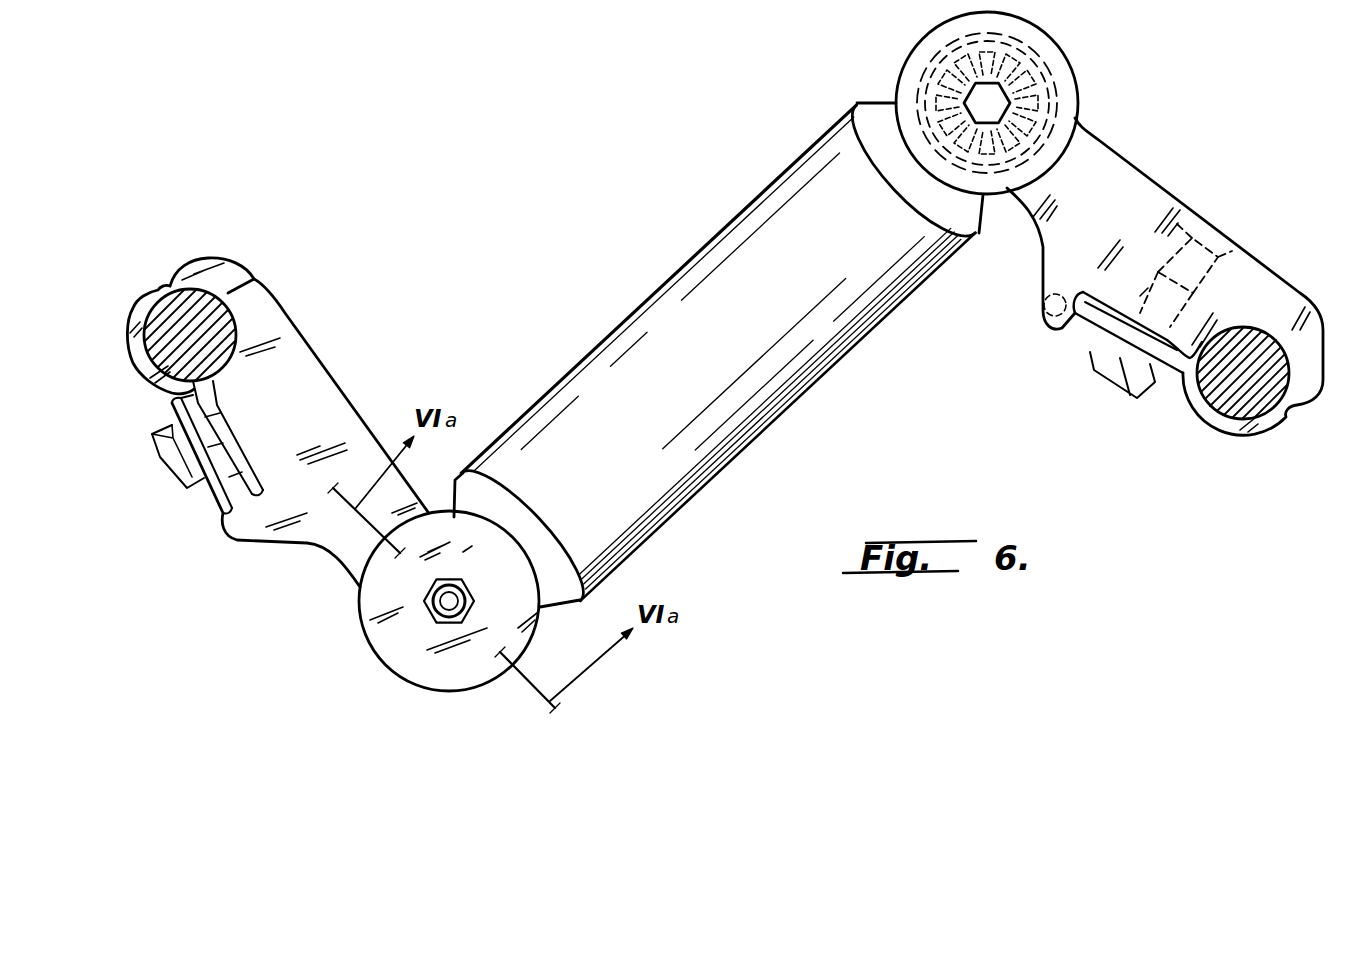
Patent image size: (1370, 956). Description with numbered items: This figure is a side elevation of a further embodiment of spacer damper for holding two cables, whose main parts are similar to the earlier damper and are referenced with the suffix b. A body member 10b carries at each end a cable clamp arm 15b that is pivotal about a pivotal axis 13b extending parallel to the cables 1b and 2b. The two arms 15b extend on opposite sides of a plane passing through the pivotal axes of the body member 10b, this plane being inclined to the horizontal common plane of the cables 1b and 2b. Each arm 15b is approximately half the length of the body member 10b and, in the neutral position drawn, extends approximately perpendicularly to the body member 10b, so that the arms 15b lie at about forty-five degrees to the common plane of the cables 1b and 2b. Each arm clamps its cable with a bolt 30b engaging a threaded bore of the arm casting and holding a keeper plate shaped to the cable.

The cable 1b is at (254, 270).
The cable 2b is at (1290, 381).
The body member 10b is at (660, 283).
The pivotal axis 13b is at (428, 613).
The cable clamp arm 15b is at (326, 364).
The bolt 30b is at (174, 473).